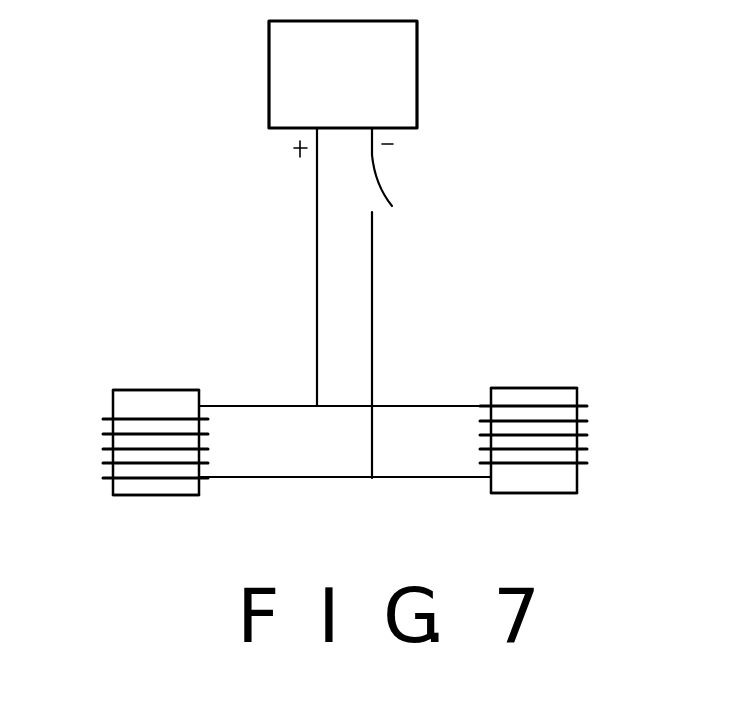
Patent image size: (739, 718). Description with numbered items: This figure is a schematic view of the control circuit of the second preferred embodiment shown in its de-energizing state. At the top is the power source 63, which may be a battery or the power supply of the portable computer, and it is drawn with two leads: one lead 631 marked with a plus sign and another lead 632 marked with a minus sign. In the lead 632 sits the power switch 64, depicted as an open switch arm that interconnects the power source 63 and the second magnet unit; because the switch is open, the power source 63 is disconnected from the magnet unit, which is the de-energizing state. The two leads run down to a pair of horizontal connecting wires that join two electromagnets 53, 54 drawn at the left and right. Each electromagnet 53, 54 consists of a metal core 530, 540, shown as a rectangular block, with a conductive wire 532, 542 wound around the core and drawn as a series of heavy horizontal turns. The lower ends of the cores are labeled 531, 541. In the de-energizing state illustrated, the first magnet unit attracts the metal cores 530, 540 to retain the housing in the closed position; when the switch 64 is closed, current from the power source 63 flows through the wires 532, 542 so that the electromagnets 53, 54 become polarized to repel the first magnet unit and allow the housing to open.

The power source 63 is at (410, 62).
The positive lead wire 631 is at (317, 228).
The negative lead wire 632 is at (374, 158).
The power switch 64 is at (387, 193).
The electromagnet 53 is at (566, 397).
The metal core 530 is at (512, 388).
The end of second electromagnet 531 is at (535, 493).
The conductive wire 532 is at (550, 436).
The electromagnet 54 is at (125, 405).
The metal core 540 is at (154, 390).
The end of first electromagnet 541 is at (177, 497).
The conductive wire 542 is at (155, 419).